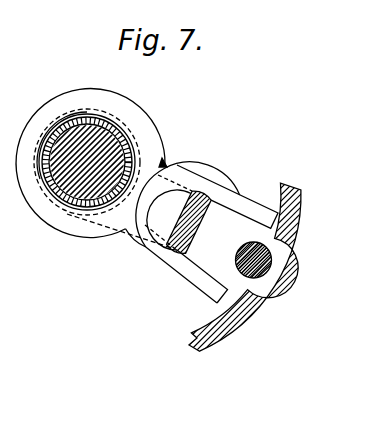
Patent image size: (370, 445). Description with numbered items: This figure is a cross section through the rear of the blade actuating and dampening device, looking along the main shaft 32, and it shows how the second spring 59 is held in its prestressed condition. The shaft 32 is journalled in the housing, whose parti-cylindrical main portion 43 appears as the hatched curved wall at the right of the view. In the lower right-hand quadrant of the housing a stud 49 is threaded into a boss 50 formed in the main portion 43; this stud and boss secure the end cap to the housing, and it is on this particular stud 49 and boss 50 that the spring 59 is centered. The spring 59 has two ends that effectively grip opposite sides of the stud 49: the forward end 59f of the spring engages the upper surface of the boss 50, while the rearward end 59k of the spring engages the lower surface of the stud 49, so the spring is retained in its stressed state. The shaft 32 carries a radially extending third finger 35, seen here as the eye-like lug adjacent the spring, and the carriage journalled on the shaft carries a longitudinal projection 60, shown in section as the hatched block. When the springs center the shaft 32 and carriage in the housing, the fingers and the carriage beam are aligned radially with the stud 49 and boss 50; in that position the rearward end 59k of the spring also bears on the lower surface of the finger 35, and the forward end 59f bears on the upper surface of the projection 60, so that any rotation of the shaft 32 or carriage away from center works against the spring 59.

The second spring 59 is at (66, 100).
The main shaft 32 is at (77, 199).
The third finger 35 is at (176, 198).
The forward end of the spring 59f is at (246, 205).
The longitudinal projection 60 is at (200, 215).
The rearward end of the spring 59k is at (185, 273).
The boss 50 is at (208, 288).
The stud 49 is at (257, 268).
The parti-cylindrical main portion 43 is at (221, 332).